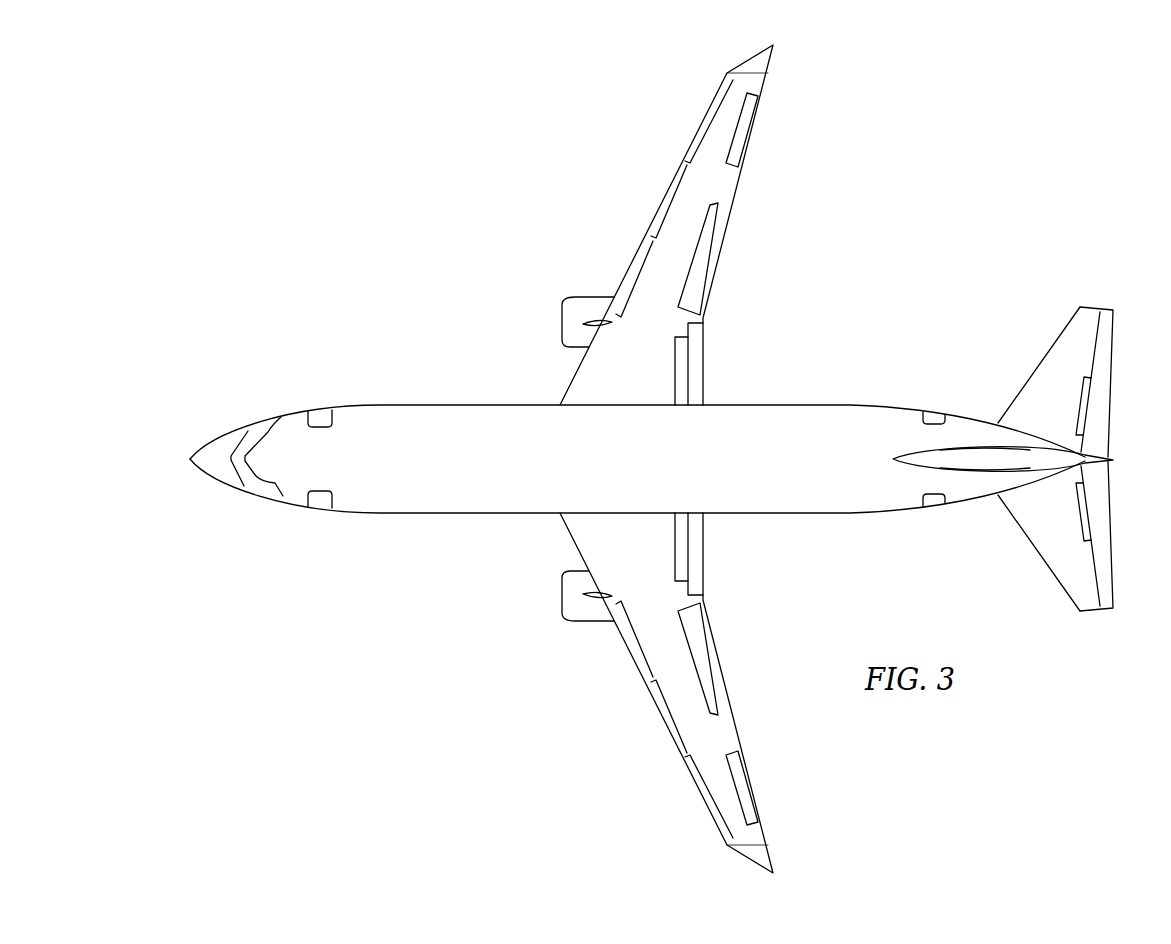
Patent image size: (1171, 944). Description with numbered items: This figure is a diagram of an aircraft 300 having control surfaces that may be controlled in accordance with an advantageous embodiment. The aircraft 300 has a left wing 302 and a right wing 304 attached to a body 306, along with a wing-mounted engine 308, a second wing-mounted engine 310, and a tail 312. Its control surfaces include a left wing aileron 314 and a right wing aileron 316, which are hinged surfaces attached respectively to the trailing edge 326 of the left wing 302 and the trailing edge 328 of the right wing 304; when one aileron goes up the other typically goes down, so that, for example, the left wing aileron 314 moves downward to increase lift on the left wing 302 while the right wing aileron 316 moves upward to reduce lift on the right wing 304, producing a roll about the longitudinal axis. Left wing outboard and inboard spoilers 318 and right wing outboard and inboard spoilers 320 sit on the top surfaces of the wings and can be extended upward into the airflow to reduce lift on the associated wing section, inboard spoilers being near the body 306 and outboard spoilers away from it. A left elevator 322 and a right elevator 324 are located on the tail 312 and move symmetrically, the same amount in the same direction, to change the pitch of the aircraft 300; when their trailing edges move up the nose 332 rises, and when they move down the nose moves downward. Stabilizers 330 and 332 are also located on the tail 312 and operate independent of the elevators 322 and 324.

The aircraft 300 is at (938, 131).
The left wing 302 is at (695, 693).
The right wing 304 is at (695, 225).
The body 306 is at (424, 403).
The wing-mounted engine 308 is at (588, 297).
The wing-mounted engine 310 is at (588, 621).
The tail 312 is at (1064, 461).
The left wing aileron 314 is at (753, 790).
The right wing aileron 316 is at (753, 133).
The left wing outboard and inboard spoilers 318 is at (721, 668).
The right wing outboard and inboard spoilers 320 is at (721, 250).
The left elevator 322 is at (1068, 600).
The right elevator 324 is at (1097, 347).
The trailing edge 326 is at (774, 868).
The trailing edge 328 is at (774, 50).
The stabilizer 330 is at (1031, 407).
The stabilizer 332 is at (210, 441).